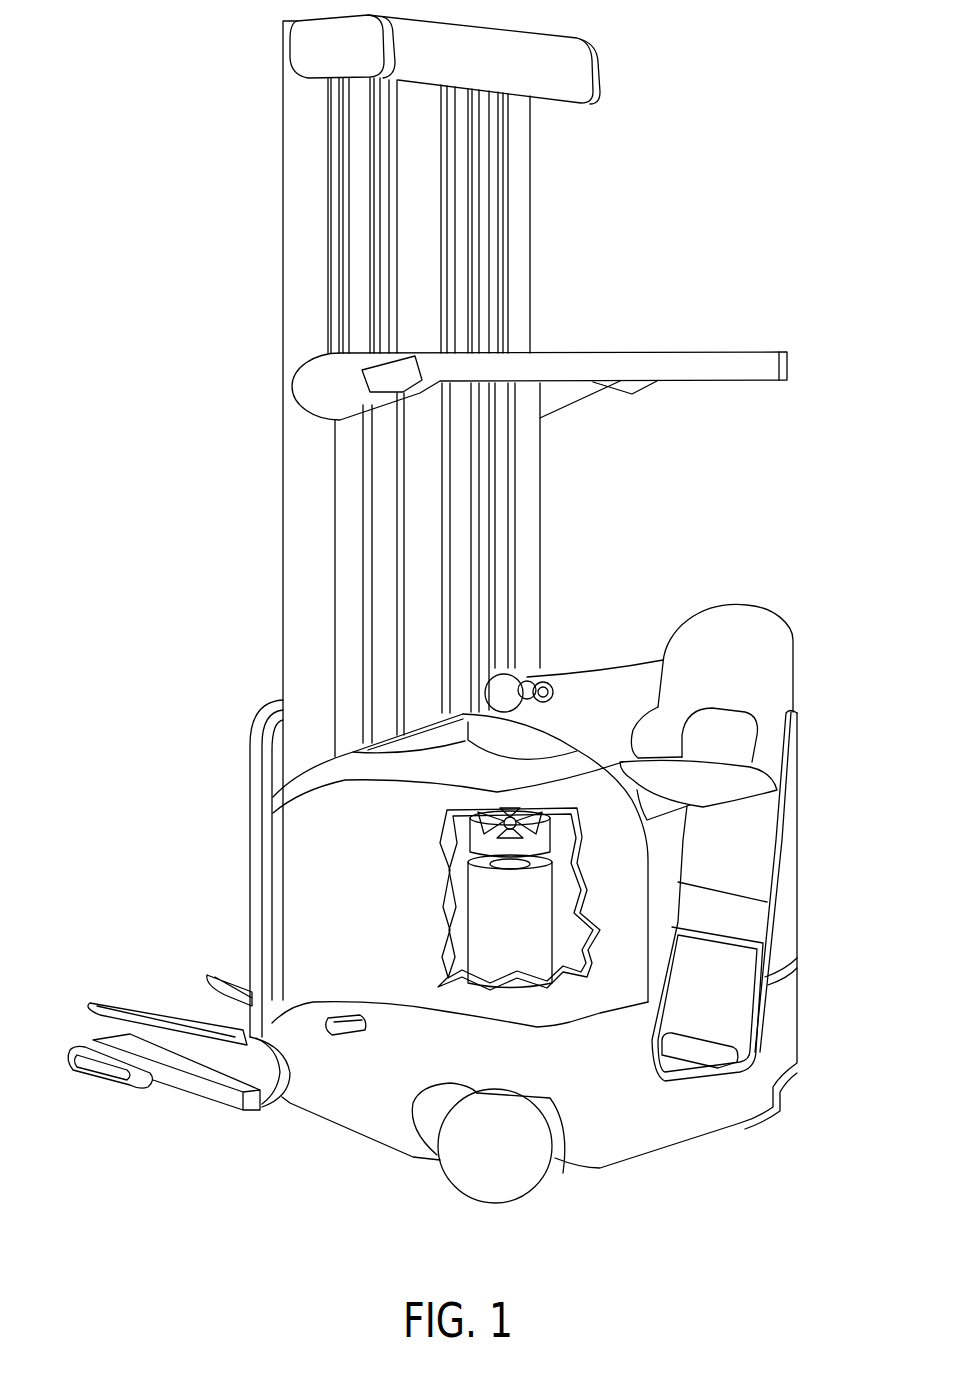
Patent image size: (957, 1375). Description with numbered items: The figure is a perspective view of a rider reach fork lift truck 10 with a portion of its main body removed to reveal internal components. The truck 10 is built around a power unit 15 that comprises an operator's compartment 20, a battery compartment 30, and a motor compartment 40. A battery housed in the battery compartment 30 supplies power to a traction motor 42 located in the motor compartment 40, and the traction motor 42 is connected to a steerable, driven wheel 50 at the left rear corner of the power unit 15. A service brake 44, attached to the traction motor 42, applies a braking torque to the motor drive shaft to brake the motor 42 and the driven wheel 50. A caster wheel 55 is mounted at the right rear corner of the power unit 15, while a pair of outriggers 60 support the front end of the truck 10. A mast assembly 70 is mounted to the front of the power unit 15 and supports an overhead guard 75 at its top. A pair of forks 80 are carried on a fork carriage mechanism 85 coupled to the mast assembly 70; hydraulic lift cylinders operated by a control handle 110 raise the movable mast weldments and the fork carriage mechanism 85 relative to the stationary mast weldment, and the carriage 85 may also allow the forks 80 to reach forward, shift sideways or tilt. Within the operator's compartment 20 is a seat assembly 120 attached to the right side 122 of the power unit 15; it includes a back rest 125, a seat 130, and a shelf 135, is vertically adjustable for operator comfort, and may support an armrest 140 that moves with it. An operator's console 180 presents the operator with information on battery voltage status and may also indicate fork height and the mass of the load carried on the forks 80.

The rider reach fork lift truck 10 is at (469, 609).
The power unit 15 is at (548, 958).
The operator's compartment 20 is at (730, 874).
The battery compartment 30 is at (467, 823).
The motor compartment 40 is at (481, 908).
The traction motor 42 is at (535, 925).
The service brake 44 is at (478, 846).
The steerable wheel 50 is at (460, 1163).
The caster wheel 55 is at (785, 1085).
The outriggers 60 is at (138, 1085).
The mast assembly 70 is at (523, 507).
The overhead guard 75 is at (788, 368).
The forks 80 is at (225, 975).
The fork carriage mechanism 85 is at (250, 742).
The control handle 110 is at (530, 678).
The seat assembly 120 is at (743, 693).
The right side 122 is at (797, 862).
The back rest 125 is at (795, 655).
The seat 130 is at (740, 807).
The shelf 135 is at (727, 730).
The armrest 140 is at (620, 672).
The operator's console 180 is at (515, 744).